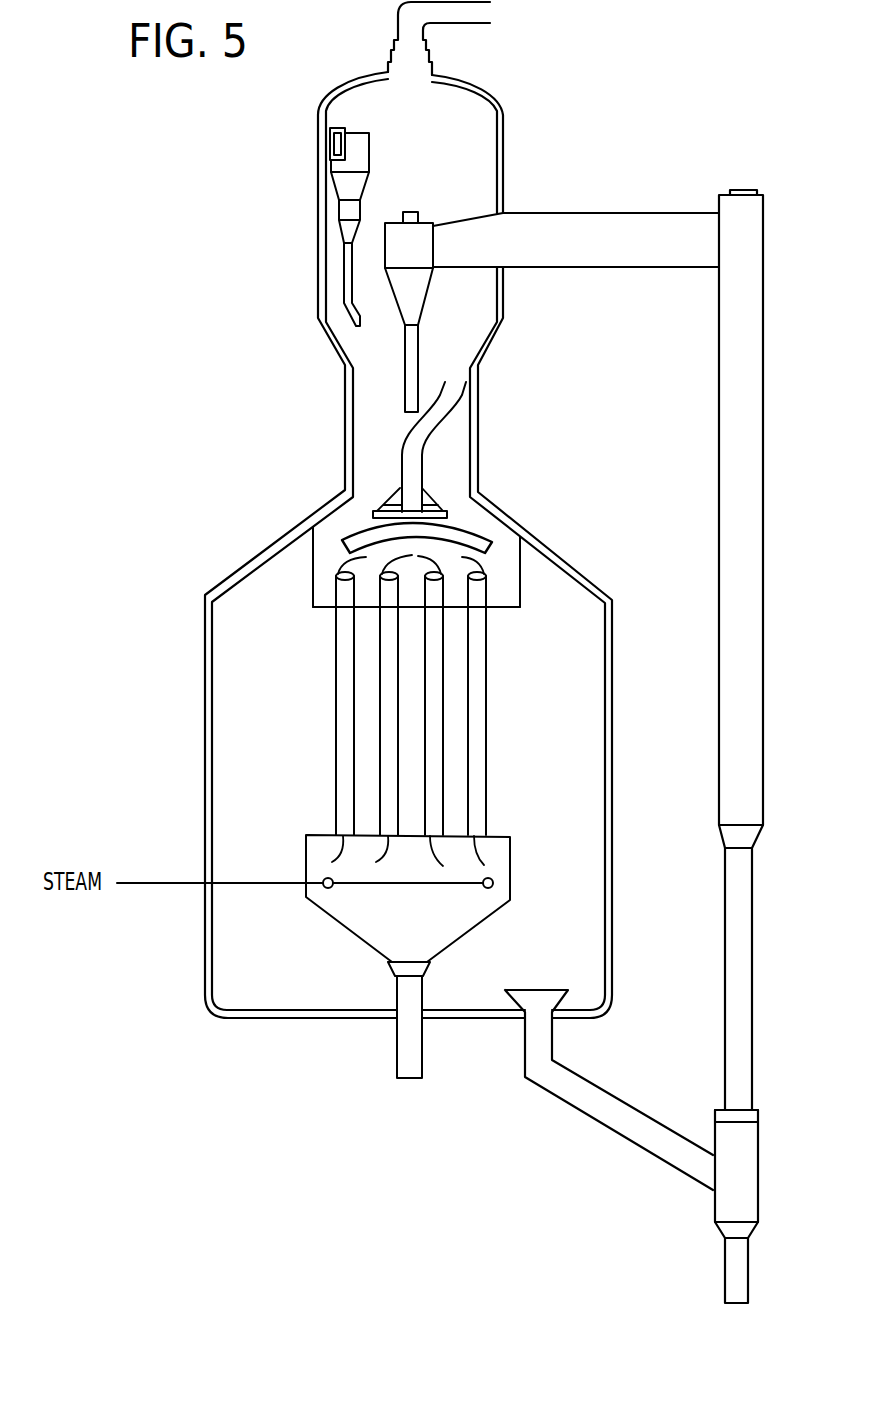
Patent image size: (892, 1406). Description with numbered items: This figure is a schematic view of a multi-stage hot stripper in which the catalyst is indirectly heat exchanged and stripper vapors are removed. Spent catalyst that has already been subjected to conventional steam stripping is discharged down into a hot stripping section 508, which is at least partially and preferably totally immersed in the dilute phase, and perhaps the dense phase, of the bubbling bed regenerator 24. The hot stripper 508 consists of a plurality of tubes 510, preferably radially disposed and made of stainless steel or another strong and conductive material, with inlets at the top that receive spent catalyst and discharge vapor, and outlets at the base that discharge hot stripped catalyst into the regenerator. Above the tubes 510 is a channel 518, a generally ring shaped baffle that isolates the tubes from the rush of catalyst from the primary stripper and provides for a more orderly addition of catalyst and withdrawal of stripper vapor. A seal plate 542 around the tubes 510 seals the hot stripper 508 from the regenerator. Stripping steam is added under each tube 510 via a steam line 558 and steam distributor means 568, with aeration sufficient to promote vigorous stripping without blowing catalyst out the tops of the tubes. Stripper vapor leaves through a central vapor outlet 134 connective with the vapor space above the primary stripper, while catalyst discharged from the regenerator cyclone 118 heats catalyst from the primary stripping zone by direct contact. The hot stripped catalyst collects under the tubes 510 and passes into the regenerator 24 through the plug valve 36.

The bubbling bed regenerator 24 is at (617, 598).
The plug valve 36 is at (428, 968).
The regenerator cyclone 118 is at (585, 698).
The central vapor outlet 134 is at (466, 418).
The hot stripping section 508 is at (521, 573).
The tubes 510 is at (487, 756).
The channel 518 is at (484, 504).
The seal plate 542 is at (497, 609).
The steam line 558 is at (183, 880).
The steam distributor means 568 is at (493, 880).